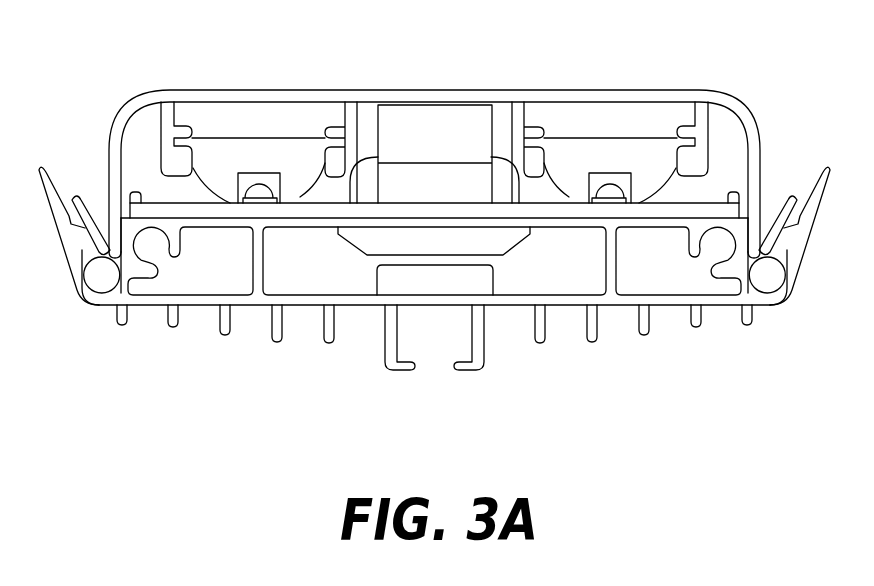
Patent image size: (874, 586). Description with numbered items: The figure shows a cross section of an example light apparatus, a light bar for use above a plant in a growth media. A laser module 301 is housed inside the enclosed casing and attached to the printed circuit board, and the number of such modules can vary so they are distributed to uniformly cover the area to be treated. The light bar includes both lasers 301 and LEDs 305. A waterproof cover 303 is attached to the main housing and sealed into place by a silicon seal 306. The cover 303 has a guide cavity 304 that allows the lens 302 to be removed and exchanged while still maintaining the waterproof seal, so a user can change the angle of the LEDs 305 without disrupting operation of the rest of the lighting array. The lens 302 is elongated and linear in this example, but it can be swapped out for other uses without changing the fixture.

The laser module 301 is at (413, 110).
The lens 302 is at (682, 147).
The waterproof cover 303 is at (699, 90).
The guide cavity 304 is at (177, 148).
The LED 305 is at (612, 193).
The silicon seal 306 is at (777, 273).